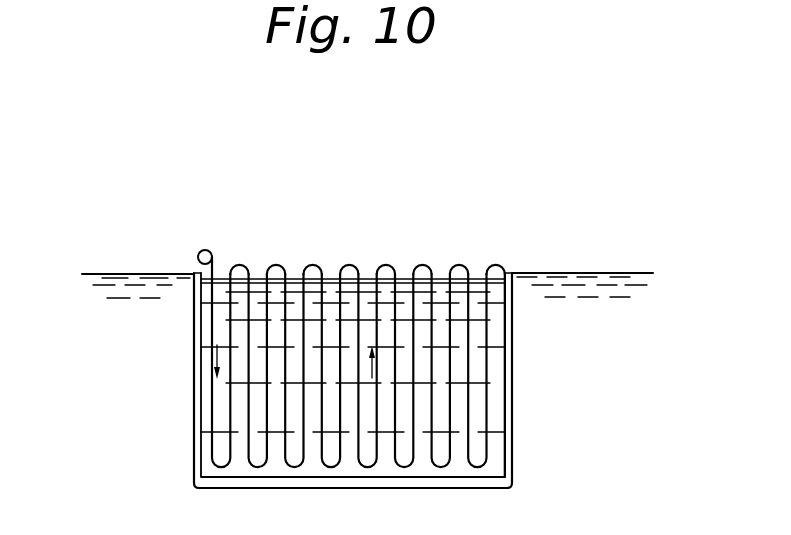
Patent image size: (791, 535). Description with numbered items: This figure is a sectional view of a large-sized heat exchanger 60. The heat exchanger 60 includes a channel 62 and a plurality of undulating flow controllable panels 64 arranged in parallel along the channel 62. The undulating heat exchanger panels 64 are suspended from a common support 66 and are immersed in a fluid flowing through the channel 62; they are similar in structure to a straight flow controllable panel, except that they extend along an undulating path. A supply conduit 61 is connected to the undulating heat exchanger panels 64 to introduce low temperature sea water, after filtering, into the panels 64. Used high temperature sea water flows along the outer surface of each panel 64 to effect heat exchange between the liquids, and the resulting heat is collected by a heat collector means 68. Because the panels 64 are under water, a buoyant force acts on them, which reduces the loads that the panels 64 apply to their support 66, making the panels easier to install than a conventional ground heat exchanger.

The large-sized heat exchanger 60 is at (399, 181).
The supply conduit 61 is at (495, 268).
The channel 62 is at (496, 339).
The undulating flow controllable panel 64 is at (322, 288).
The common support 66 is at (277, 268).
The heat collector means 68 is at (208, 250).